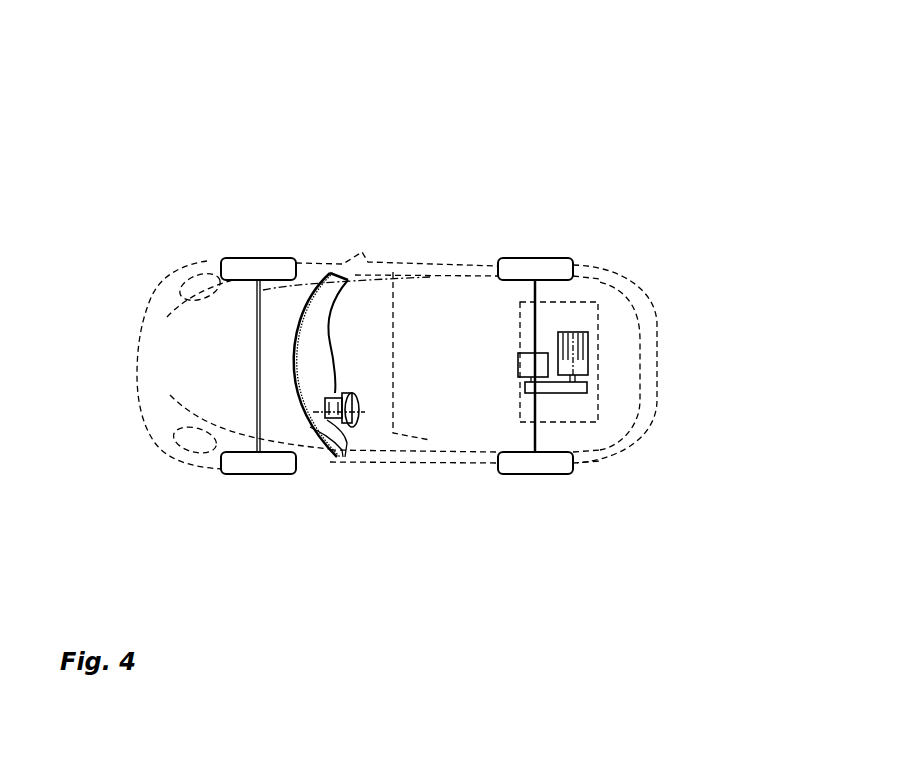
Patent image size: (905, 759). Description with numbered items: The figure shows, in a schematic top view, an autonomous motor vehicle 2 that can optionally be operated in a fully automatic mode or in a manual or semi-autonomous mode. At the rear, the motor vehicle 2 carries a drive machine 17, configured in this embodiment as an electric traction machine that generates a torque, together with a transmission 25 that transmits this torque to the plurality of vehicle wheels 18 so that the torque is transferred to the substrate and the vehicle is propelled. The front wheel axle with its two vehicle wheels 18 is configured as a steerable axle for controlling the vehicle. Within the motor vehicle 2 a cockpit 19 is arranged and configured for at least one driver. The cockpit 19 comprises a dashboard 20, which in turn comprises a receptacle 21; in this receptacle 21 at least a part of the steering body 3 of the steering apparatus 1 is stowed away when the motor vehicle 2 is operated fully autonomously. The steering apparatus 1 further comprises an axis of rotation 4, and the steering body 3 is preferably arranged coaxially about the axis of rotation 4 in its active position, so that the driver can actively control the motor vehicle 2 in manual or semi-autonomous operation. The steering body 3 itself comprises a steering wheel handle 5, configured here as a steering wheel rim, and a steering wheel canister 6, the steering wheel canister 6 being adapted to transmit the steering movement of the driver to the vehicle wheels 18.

The steering apparatus 1 is at (356, 530).
The motor vehicle 2 is at (832, 52).
The steering body 3 is at (360, 510).
The axis of rotation 4 is at (308, 420).
The steering wheel handle 5 is at (345, 453).
The steering wheel canister 6 is at (337, 452).
The drive machine 17 is at (567, 365).
The vehicle wheels 18 is at (225, 262).
The cockpit 19 is at (372, 340).
The dashboard 20 is at (309, 313).
The receptacle 21 is at (338, 392).
The transmission 25 is at (528, 367).